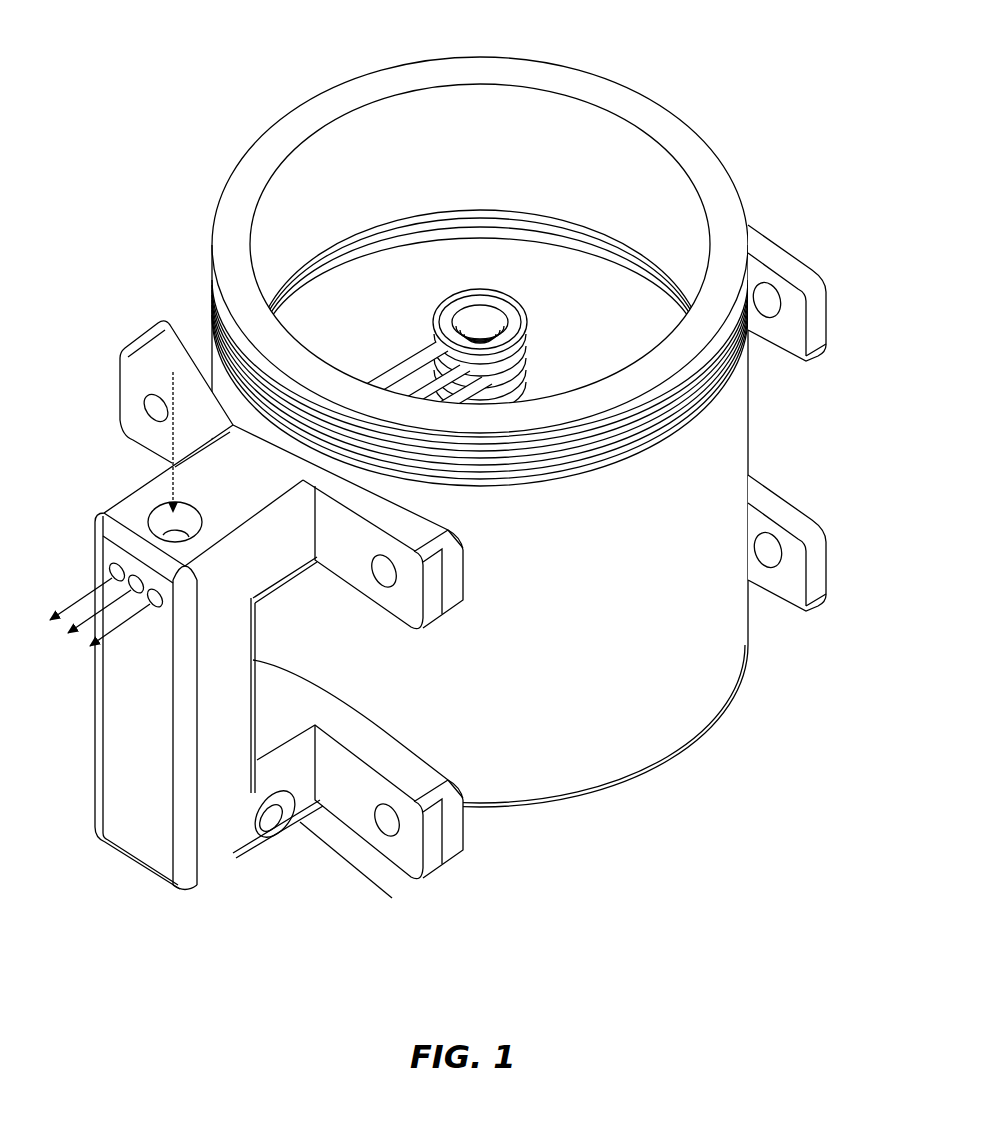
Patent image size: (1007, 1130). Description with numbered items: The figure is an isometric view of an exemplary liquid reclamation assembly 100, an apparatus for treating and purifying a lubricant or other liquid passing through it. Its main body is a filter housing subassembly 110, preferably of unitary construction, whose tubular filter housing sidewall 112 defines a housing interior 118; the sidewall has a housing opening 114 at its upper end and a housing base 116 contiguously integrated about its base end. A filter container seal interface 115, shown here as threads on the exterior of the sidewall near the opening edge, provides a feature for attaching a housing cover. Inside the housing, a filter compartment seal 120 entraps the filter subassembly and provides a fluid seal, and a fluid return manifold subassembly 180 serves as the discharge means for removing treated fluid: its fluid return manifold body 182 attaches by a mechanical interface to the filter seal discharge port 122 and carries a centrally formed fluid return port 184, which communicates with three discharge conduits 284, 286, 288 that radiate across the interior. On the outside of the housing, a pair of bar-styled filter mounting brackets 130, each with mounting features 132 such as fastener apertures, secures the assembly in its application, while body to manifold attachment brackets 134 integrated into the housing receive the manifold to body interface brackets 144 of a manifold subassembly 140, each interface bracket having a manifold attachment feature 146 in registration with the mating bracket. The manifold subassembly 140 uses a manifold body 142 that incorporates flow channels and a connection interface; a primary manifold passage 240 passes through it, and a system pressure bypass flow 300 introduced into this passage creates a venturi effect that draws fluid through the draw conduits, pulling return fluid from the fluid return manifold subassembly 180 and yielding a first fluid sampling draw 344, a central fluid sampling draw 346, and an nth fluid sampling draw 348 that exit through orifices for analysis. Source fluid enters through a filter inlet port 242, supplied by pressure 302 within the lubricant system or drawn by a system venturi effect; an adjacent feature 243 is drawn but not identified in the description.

The liquid reclamation assembly 100 is at (185, 86).
The filter housing subassembly 110 is at (684, 784).
The tubular filter housing sidewall 112 is at (668, 702).
The housing opening 114 is at (477, 72).
The filter container seal interface 115 is at (650, 440).
The housing base 116 is at (618, 788).
The housing interior 118 is at (576, 150).
The filter compartment seal 120 is at (497, 250).
The filter seal discharge port 122 is at (528, 394).
The filter mounting bracket 130 is at (824, 334).
The mounting feature 132 is at (768, 567).
The body to manifold attachment bracket 134 is at (454, 585).
The manifold subassembly 140 is at (100, 466).
The manifold body 142 is at (133, 834).
The manifold to body interface bracket 144 is at (434, 596).
The manifold attachment feature 146 is at (381, 590).
The fluid return manifold subassembly 180 is at (518, 287).
The fluid return manifold body 182 is at (530, 338).
The fluid return port 184 is at (477, 316).
The primary manifold passage 240 is at (148, 508).
The filter inlet port 242 is at (278, 840).
The counterbore 243 is at (255, 826).
The discharge conduit 284 is at (381, 387).
The discharge conduit 286 is at (402, 383).
The discharge conduit 288 is at (429, 383).
The system pressure bypass flow 300 is at (165, 443).
The pressure 302 is at (357, 873).
The first fluid sampling draw 344 is at (82, 598).
The central fluid sampling draw 346 is at (88, 613).
The nth fluid sampling draw 348 is at (127, 625).